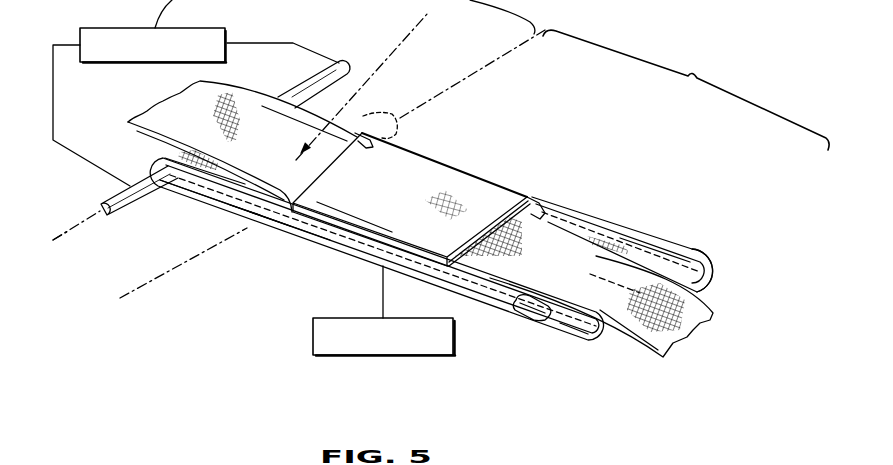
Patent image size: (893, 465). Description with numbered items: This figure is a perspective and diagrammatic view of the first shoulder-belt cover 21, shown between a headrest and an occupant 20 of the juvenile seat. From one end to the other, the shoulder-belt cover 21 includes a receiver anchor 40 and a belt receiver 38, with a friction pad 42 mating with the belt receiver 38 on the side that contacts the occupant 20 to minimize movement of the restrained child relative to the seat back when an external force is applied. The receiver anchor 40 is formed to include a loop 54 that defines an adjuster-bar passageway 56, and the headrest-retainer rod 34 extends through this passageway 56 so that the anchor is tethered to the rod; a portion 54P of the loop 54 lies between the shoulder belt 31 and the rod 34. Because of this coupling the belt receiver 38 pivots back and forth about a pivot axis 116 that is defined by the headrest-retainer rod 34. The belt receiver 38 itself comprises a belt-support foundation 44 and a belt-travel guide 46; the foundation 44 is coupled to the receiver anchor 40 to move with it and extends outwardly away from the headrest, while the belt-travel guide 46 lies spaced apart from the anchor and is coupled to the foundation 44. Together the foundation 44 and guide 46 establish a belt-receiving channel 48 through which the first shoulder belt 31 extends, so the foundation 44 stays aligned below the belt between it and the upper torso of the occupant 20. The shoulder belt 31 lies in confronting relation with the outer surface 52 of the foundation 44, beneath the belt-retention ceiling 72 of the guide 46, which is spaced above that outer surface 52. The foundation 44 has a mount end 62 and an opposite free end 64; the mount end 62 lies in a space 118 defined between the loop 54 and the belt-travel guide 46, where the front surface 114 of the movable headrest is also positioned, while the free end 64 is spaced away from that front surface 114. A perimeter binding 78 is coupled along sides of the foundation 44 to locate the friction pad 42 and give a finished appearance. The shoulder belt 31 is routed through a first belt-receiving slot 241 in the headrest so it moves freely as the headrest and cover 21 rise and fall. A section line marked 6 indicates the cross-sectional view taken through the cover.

The section line for FIG. 6 is at (154, 79).
The occupant 20 is at (379, 357).
The first shoulder-belt cover 21 is at (561, 118).
The first shoulder belt 31 is at (203, 117).
The headrest-retainer rod 34 is at (344, 74).
The belt receiver 38 is at (652, 195).
The receiver anchor 40 is at (163, 240).
The friction pad 42 is at (531, 331).
The belt-support foundation 44 is at (578, 226).
The belt-travel guide 46 is at (508, 174).
The belt-receiving channel 48 is at (491, 239).
The outer surface 52 is at (652, 253).
The loop 54 is at (189, 201).
The portion of loop 54P is at (167, 158).
The adjuster-bar passageway 56 is at (166, 186).
The mount end 62 is at (271, 218).
The free end 64 is at (729, 271).
The belt-retention ceiling 72 is at (402, 206).
The perimeter binding 78 is at (558, 342).
The front surface 114 is at (418, 107).
The pivot axis 116 is at (55, 241).
The space 118 is at (344, 128).
The first belt-receiving slot 241 is at (240, 220).